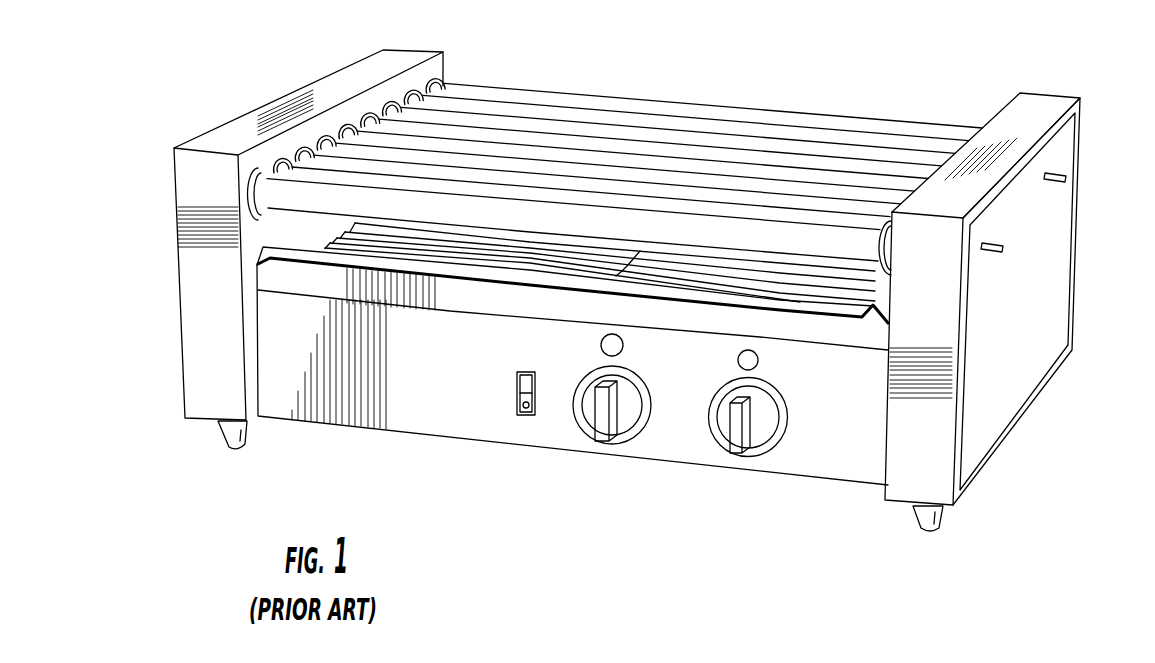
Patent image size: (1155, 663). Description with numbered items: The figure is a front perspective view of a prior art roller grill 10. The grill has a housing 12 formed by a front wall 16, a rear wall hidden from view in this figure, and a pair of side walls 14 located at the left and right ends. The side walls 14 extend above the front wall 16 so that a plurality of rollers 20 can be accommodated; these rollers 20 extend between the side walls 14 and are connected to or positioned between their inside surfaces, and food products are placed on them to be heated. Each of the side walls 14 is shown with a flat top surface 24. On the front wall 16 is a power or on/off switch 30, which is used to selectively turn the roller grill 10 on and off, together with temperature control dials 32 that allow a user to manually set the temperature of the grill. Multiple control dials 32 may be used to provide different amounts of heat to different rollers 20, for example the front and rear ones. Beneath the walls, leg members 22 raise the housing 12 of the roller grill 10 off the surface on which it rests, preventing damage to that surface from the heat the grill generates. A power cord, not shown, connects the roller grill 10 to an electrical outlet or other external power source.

The roller grill 10 is at (586, 301).
The housing 12 is at (980, 468).
The side walls 14 is at (608, 270).
The front wall 16 is at (833, 433).
The rollers 20 is at (732, 127).
The leg members 22 is at (233, 447).
The flat top surface 24 is at (1035, 110).
The power or on/off switch 30 is at (524, 415).
The temperature control dials 32 is at (755, 440).